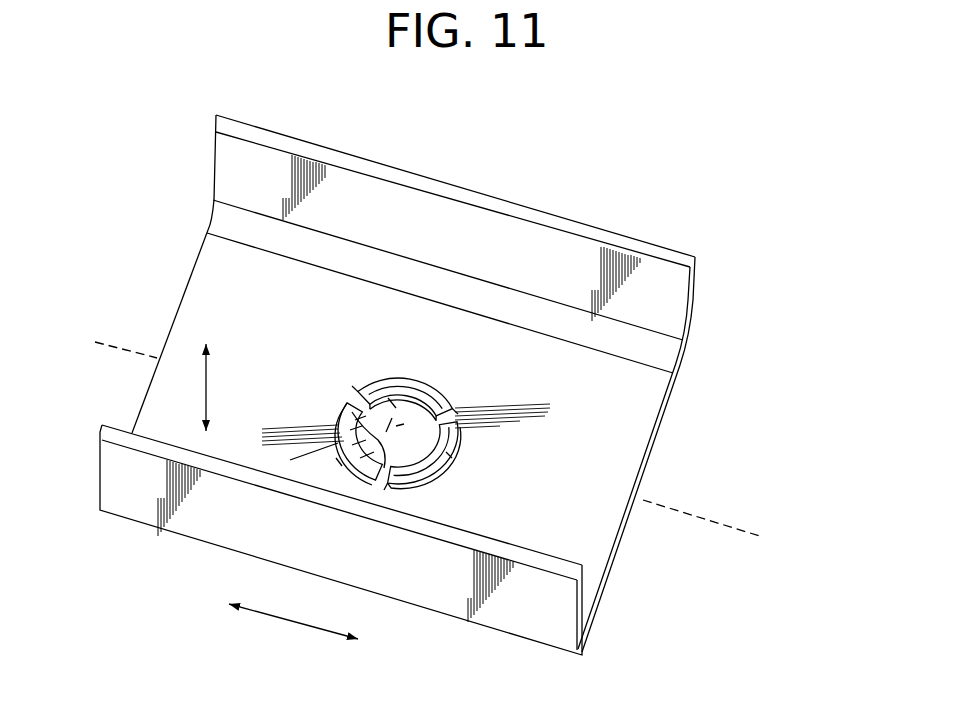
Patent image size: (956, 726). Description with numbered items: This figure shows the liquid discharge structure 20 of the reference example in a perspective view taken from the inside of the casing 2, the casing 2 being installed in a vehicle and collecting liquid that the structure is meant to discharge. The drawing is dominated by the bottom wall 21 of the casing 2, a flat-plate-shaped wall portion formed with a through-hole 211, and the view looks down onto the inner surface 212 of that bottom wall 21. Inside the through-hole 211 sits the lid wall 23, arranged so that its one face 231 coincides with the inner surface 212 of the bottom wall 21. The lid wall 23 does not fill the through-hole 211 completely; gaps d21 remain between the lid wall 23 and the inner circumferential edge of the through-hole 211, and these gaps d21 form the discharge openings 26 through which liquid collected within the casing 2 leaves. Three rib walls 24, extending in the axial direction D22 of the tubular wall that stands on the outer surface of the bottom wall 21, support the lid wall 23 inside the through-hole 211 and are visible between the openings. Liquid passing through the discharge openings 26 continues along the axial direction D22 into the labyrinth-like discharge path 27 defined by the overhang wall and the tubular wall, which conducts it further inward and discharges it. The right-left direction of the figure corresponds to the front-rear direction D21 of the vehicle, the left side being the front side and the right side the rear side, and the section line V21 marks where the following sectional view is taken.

The casing 2 is at (507, 183).
The liquid discharge structure 20 is at (179, 258).
The bottom wall 21 is at (635, 428).
The through-hole 211 is at (378, 372).
The inner surface 212 is at (565, 478).
The lid wall 23 is at (406, 413).
The face 231 is at (455, 434).
The rib wall 24 is at (343, 393).
The discharge opening 26 is at (392, 400).
The labyrinth-like discharge path 27 is at (338, 418).
The gap d21 is at (300, 458).
The front-rear direction D21 is at (285, 620).
The axial direction D22 is at (205, 393).
The section line V21- V21 is at (106, 341).